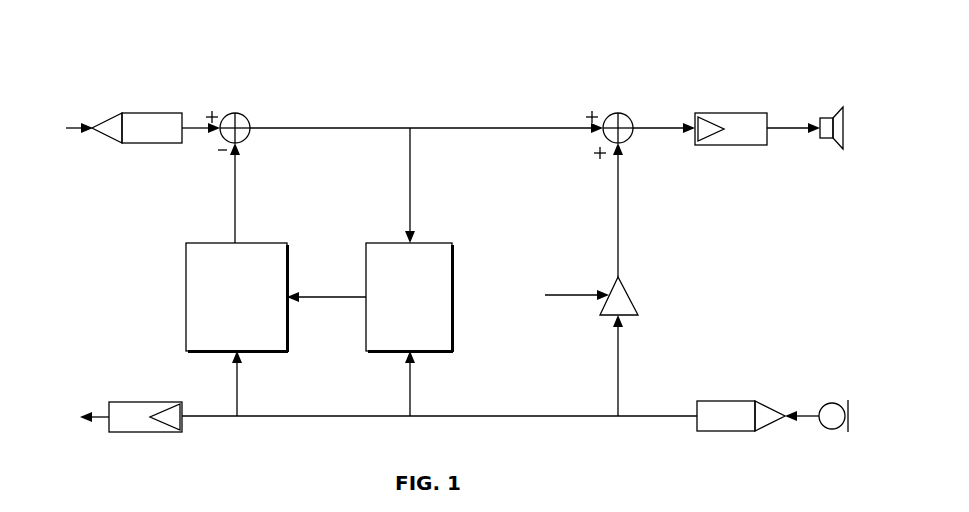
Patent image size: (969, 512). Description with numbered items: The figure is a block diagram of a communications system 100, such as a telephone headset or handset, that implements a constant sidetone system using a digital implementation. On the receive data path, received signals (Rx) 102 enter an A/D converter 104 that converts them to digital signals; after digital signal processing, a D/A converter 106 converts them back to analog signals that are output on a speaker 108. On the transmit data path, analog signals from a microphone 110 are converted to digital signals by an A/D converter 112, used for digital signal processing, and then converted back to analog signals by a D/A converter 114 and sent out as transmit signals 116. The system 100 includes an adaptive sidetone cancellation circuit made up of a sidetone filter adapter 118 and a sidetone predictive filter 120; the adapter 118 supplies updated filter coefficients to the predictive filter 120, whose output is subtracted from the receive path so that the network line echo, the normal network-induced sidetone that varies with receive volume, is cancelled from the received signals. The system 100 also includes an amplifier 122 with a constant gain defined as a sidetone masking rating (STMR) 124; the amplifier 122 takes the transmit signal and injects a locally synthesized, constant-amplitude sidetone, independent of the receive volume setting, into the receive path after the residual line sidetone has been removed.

The communications system 100 is at (790, 66).
The received signals (Rx) 102 is at (50, 110).
The A/D converter 104 is at (147, 113).
The D/A converter 106 is at (733, 145).
The speaker 108 is at (827, 178).
The microphone 110 is at (826, 365).
The A/D converter 112 is at (722, 400).
The D/A converter 114 is at (145, 401).
The transmit signals 116 is at (62, 400).
The sidetone filter adapter 118 is at (409, 297).
The sidetone predictive filter 120 is at (237, 297).
The amplifier 122 is at (628, 285).
The sidetone masking rating (STMR) 124 is at (568, 262).